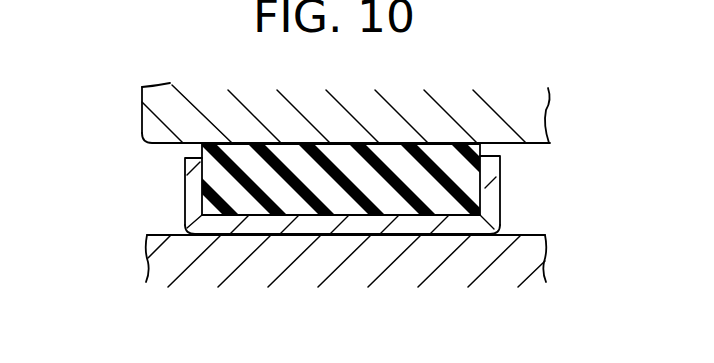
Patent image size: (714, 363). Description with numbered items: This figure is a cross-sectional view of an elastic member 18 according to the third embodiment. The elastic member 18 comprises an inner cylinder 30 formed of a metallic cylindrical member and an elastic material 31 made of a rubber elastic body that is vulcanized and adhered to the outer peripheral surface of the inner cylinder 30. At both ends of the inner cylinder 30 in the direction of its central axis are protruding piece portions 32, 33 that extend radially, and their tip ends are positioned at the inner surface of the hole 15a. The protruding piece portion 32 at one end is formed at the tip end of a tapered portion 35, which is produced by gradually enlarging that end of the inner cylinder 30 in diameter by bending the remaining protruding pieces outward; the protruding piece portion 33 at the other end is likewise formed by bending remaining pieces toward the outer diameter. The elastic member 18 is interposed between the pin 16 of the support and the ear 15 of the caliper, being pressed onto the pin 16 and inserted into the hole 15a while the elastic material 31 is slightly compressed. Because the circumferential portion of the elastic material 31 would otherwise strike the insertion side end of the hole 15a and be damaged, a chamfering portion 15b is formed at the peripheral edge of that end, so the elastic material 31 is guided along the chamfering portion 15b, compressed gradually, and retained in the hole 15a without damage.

The ear 15 is at (150, 99).
The hole 15a is at (533, 144).
The chamfering portion 15b is at (145, 140).
The pin 16 is at (527, 250).
The elastic member 18 is at (166, 200).
The inner cylinder 30 is at (372, 225).
The elastic material 31 is at (297, 198).
The protruding piece portion 32 is at (185, 163).
The protruding piece portion 33 is at (500, 190).
The tapered portion 35 is at (187, 230).